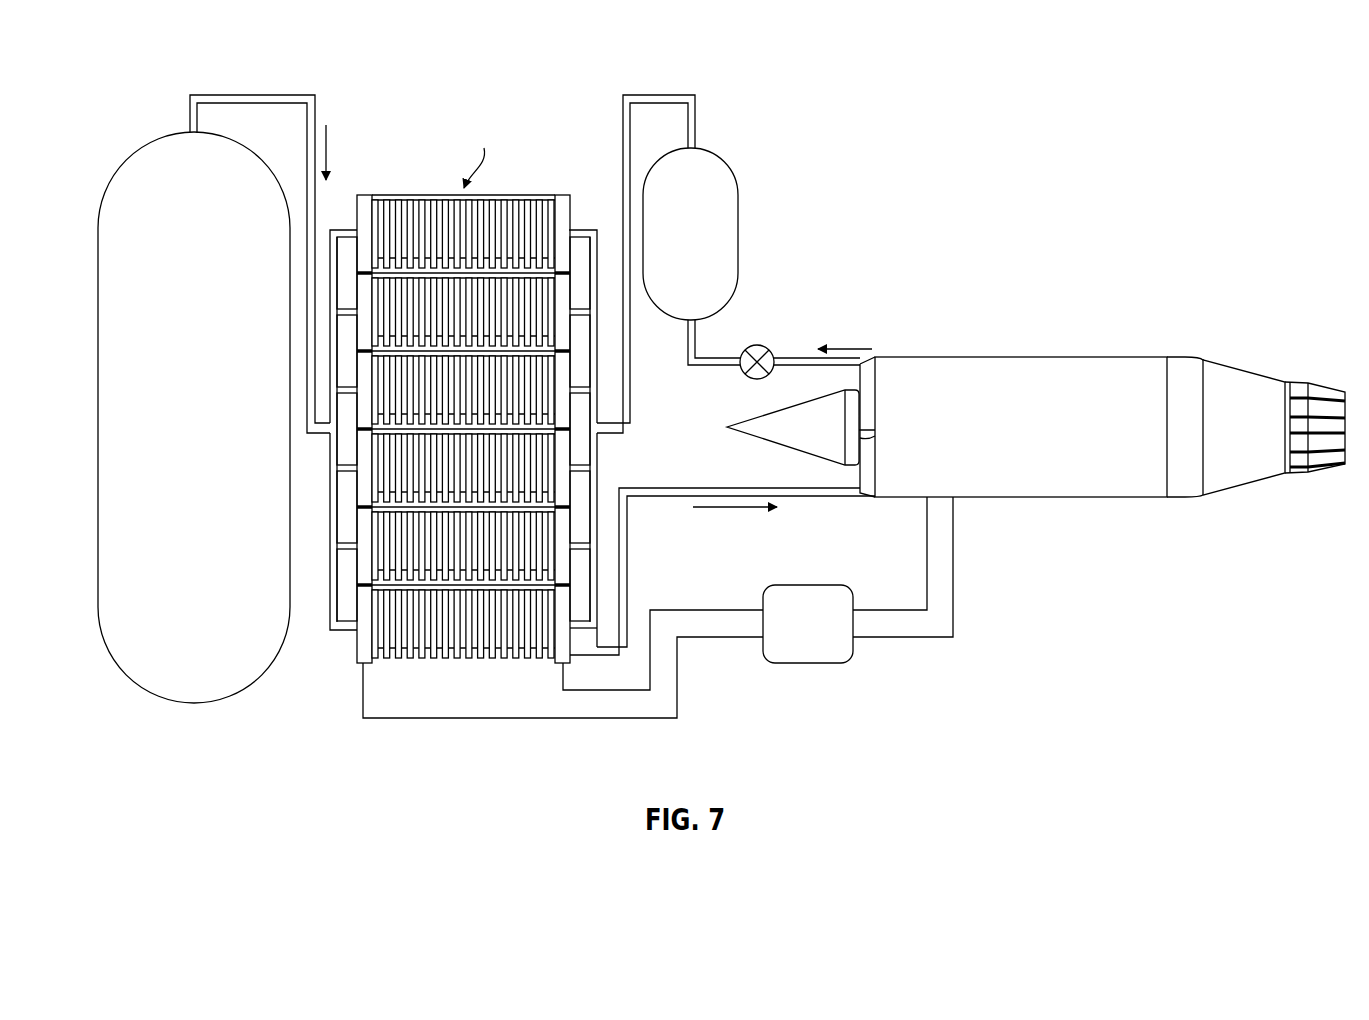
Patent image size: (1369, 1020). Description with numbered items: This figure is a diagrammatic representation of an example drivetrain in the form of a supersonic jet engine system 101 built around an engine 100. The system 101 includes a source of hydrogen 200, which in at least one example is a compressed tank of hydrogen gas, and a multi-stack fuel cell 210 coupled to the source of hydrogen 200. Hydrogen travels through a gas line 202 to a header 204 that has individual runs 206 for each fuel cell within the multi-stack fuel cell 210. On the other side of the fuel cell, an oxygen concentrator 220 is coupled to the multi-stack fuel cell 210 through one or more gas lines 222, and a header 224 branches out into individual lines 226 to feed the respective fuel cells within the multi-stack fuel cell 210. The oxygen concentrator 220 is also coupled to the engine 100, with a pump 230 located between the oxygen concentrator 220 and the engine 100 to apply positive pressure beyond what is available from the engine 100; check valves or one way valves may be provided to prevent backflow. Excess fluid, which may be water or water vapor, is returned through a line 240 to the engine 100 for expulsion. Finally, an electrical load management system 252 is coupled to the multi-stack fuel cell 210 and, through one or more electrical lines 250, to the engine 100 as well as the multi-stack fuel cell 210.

The engine 100 is at (1020, 357).
The supersonic jet engine system 101 is at (1152, 92).
The source of hydrogen 200 is at (134, 152).
The gas line 202 is at (252, 95).
The header 204 is at (330, 256).
The individual runs 206 is at (349, 195).
The multi-stack fuel cell 210 is at (483, 338).
The oxygen concentrator 220 is at (722, 160).
The gas lines 222 is at (662, 95).
The header 224 is at (597, 278).
The individual lines 226 is at (577, 230).
The pump 230 is at (757, 306).
The line 240 is at (627, 608).
The electrical lines 250 is at (596, 718).
The electrical load management system 252 is at (807, 583).